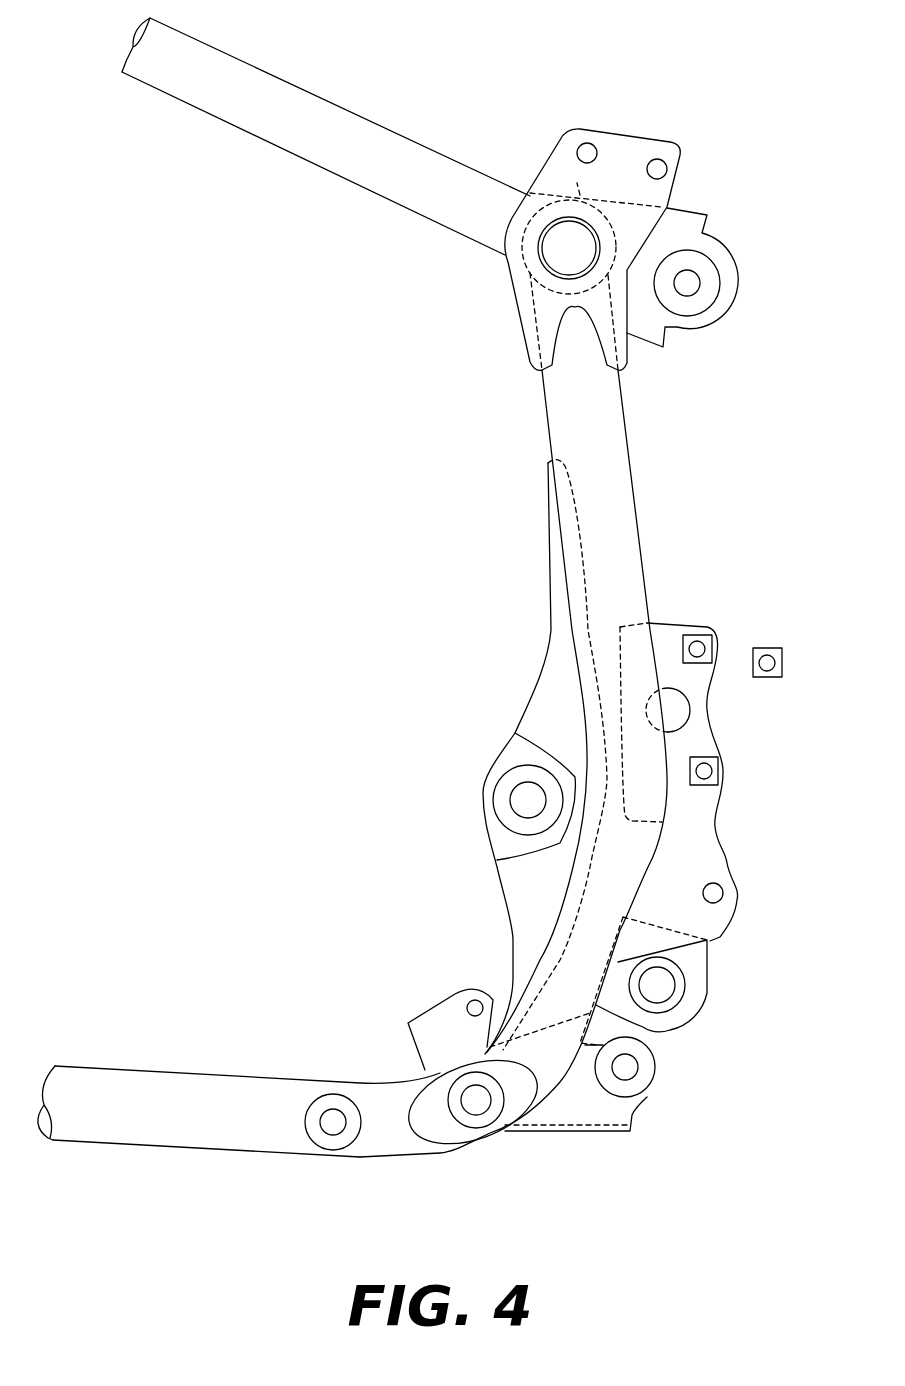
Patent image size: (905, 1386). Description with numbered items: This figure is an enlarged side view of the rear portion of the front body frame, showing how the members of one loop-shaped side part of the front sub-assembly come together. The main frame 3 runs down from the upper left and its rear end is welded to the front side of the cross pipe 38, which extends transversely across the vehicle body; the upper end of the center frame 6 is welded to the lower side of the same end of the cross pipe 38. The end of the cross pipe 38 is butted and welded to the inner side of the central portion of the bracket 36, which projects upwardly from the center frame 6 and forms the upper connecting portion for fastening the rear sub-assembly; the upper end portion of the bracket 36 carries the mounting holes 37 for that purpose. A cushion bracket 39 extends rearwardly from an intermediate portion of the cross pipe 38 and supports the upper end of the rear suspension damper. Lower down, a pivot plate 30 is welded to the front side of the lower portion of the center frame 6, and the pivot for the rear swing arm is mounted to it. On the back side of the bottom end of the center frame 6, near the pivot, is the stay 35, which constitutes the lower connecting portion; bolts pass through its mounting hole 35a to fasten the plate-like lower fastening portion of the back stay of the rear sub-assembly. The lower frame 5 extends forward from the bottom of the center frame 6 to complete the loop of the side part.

The main frame 3 is at (307, 104).
The bracket 36 is at (556, 174).
The mounting holes 37 is at (660, 158).
The cross pipe 38 is at (557, 273).
The cushion bracket 39 is at (694, 238).
The center frame 6 is at (622, 483).
The pivot plate 30 is at (542, 700).
The stay 35 is at (716, 923).
The mounting hole 35a is at (720, 888).
The lower frame 5 is at (190, 1133).